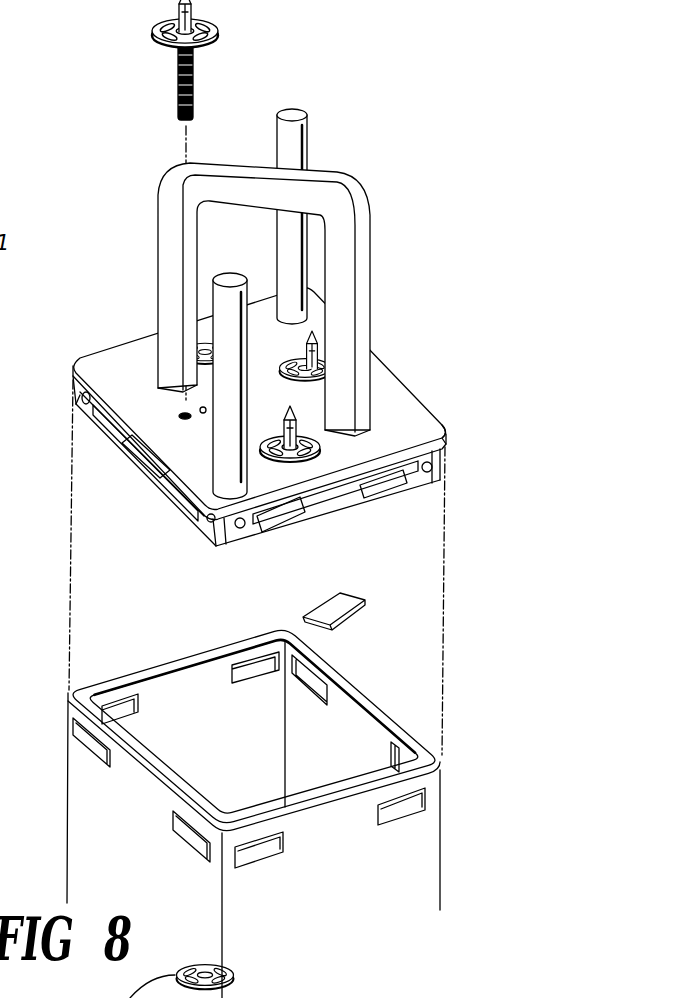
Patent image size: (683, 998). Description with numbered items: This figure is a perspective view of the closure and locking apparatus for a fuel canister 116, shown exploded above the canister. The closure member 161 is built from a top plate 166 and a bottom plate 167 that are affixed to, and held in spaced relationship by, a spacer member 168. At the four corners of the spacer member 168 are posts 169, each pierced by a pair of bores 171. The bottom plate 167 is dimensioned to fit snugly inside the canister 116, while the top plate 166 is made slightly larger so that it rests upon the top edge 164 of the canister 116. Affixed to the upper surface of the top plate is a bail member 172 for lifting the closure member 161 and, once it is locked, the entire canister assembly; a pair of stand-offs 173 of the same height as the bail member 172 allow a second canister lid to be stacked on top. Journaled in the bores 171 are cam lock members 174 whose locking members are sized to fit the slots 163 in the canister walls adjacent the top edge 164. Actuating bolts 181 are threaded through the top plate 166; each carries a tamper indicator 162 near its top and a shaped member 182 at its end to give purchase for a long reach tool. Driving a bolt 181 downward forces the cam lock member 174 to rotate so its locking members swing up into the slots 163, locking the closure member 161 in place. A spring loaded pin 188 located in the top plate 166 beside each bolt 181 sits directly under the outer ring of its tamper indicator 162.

The canister 116 is at (77, 820).
The closure member 161 is at (114, 362).
The tamper indicator 162 is at (163, 25).
The slots 163 is at (258, 672).
The top edge 164 is at (92, 692).
The top plate 166 is at (113, 352).
The bottom plate 167 is at (92, 420).
The spacer member 168 is at (444, 428).
The posts 169 is at (78, 395).
The bores 171 is at (80, 400).
The bail member 172 is at (371, 250).
The stand-offs 173 is at (310, 128).
The cam lock member 174 is at (153, 492).
The actuating bolt 181 is at (196, 96).
The shaped member 182 is at (212, 2).
The spring loaded pin 188 is at (200, 410).